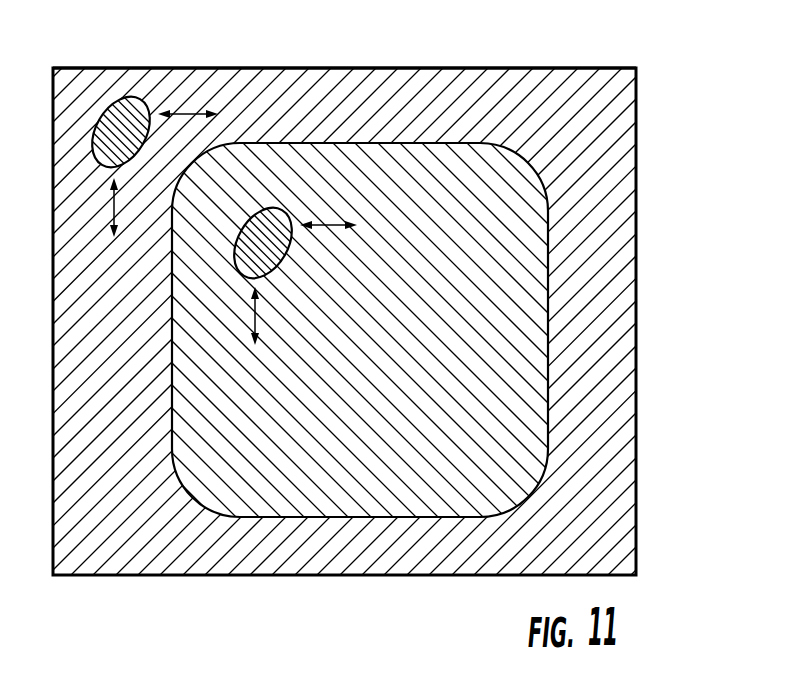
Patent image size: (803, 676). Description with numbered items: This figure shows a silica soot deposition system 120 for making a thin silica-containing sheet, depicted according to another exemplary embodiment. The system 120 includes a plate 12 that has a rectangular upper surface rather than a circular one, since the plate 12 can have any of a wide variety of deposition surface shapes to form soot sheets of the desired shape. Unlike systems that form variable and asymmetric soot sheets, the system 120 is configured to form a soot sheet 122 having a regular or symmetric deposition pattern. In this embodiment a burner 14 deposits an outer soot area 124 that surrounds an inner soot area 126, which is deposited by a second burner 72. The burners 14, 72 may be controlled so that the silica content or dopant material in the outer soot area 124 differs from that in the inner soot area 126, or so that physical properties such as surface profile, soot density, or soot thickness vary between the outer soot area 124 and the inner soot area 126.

The system 120 is at (708, 88).
The soot sheet 122 is at (598, 285).
The outer soot area 124 is at (415, 82).
The inner soot area 126 is at (492, 162).
The burner 14 is at (118, 120).
The burner 72 is at (265, 210).
The plate 12 is at (637, 385).